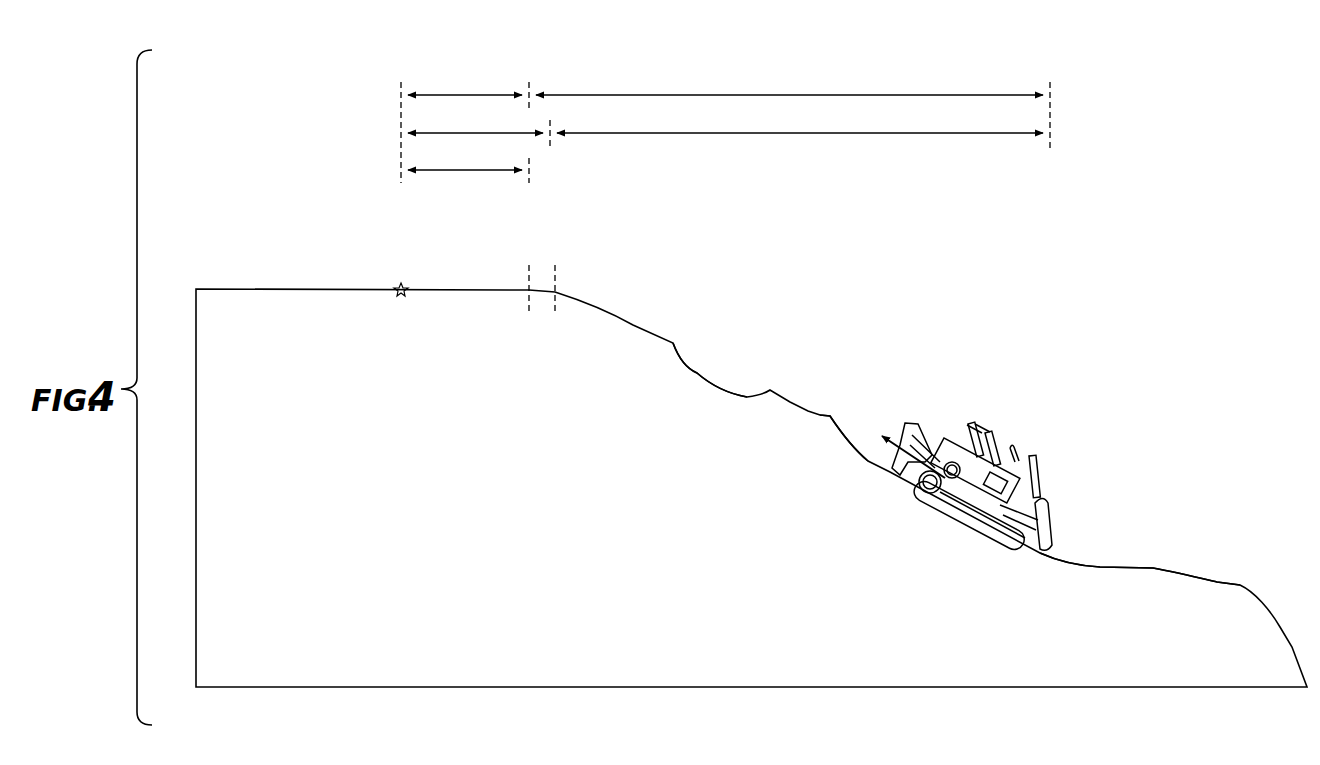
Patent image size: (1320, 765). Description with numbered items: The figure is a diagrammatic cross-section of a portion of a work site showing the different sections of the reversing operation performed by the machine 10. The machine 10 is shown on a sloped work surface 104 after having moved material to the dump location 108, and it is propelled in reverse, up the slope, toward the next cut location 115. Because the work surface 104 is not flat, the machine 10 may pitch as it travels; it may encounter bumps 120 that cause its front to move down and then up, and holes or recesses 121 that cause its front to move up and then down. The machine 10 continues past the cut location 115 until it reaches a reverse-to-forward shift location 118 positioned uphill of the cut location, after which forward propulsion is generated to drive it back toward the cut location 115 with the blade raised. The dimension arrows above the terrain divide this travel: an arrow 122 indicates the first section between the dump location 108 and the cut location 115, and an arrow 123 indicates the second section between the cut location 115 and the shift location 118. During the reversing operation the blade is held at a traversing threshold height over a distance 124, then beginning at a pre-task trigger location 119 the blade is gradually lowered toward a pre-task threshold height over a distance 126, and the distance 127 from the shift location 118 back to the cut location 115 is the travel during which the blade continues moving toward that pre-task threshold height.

The machine 10 is at (997, 433).
The work surface 104 is at (294, 289).
The dump location 108 is at (1090, 515).
The cut location 115 is at (530, 278).
The reverse-to-forward shift location 118 is at (401, 286).
The pre-task trigger location 119 is at (556, 282).
The bumps 120 is at (830, 416).
The holes or recesses 121 is at (697, 370).
The arrow indicating first section 122 is at (870, 95).
The arrow indicating second section 123 is at (457, 95).
The distance at traversing threshold height 124 is at (745, 133).
The distance during blade lowering 126 is at (457, 133).
The distance from shift location to cut location 127 is at (457, 170).